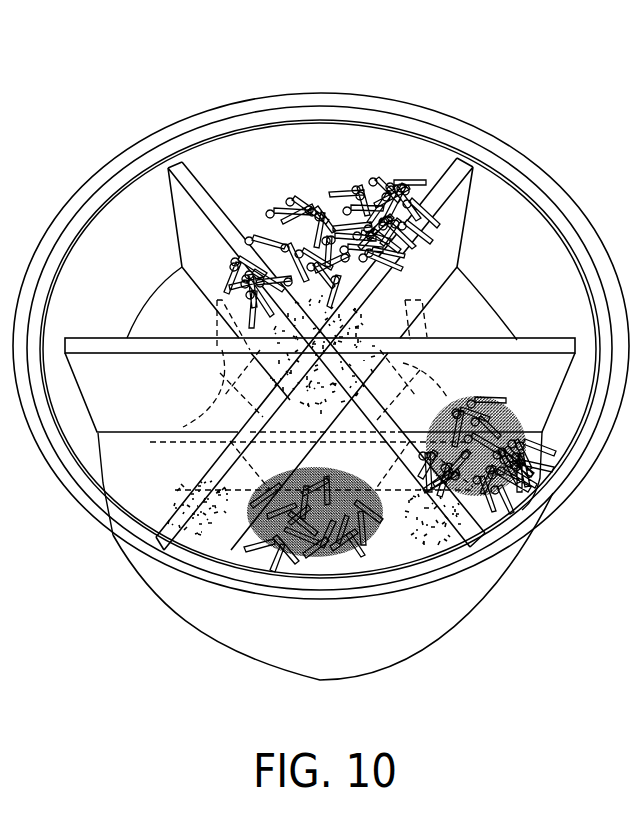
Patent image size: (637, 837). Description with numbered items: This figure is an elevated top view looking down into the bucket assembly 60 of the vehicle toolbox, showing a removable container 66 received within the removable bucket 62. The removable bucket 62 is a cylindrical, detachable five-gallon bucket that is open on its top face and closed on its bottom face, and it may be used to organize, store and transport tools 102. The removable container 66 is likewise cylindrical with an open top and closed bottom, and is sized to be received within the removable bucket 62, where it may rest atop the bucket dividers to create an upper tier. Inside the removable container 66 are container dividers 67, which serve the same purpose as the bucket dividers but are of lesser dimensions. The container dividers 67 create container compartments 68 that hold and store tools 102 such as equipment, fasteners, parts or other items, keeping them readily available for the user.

The bucket assembly 60 is at (404, 100).
The removable bucket 62 is at (116, 152).
The removable container 66 is at (92, 262).
The container dividers 67 is at (462, 153).
The container compartments 68 is at (487, 320).
The tools 102 is at (253, 183).